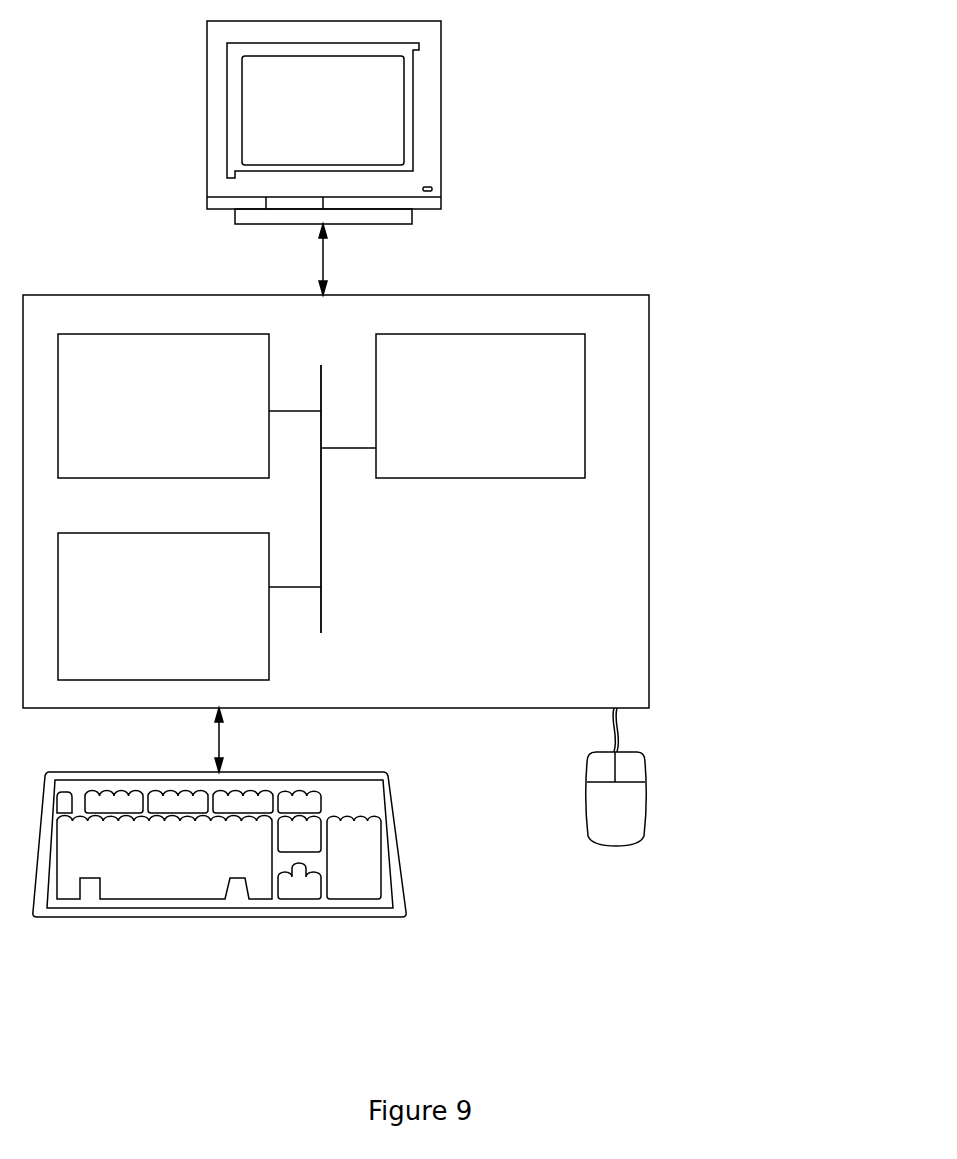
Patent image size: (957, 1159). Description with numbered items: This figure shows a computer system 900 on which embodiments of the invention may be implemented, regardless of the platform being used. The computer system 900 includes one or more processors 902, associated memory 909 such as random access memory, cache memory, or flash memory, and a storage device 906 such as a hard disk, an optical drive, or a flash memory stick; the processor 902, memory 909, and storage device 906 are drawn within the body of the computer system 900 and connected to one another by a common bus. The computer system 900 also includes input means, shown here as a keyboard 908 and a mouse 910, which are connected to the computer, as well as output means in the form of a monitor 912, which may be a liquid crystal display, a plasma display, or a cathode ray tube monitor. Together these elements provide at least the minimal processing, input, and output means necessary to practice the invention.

The computer system 900 is at (668, 166).
The processor 902 is at (146, 434).
The storage device 906 is at (460, 434).
The keyboard 908 is at (129, 880).
The memory 909 is at (146, 628).
The mouse 910 is at (655, 769).
The monitor 912 is at (304, 146).